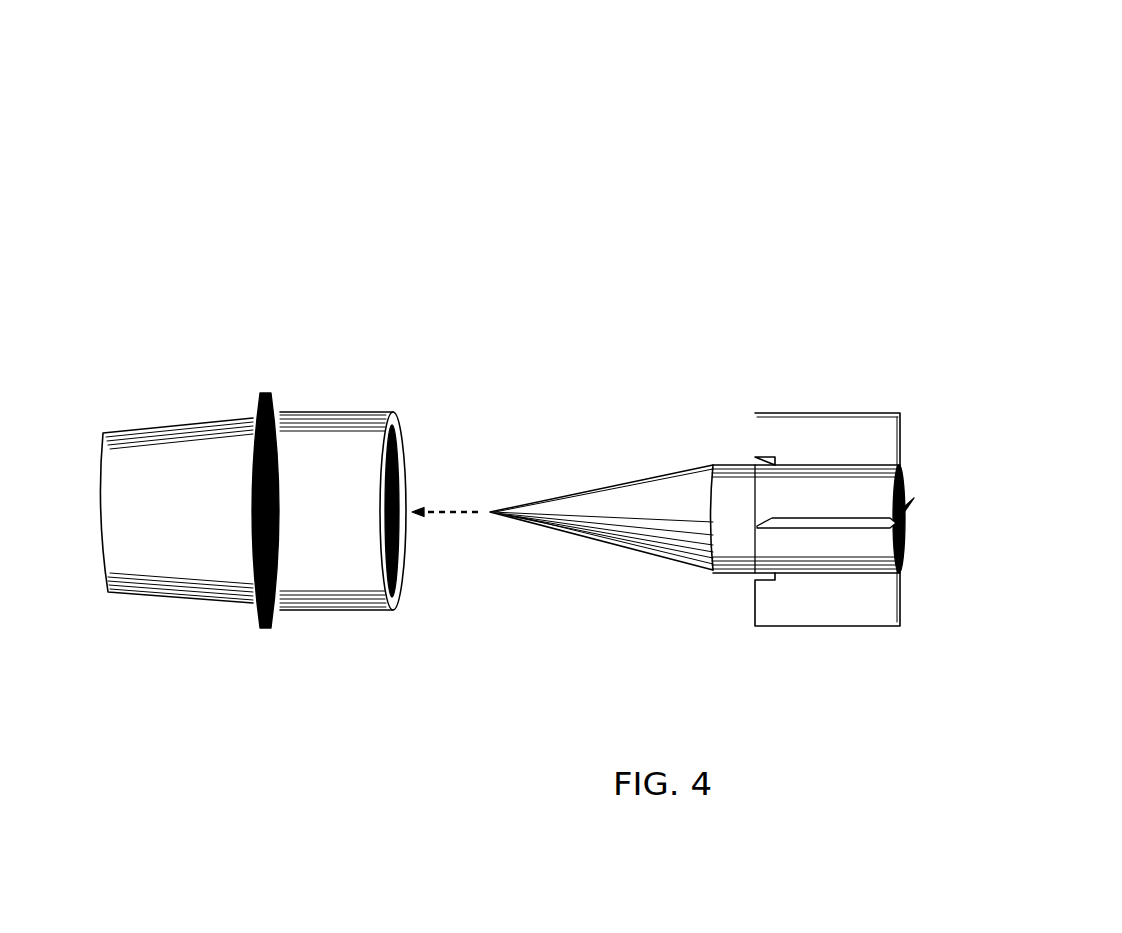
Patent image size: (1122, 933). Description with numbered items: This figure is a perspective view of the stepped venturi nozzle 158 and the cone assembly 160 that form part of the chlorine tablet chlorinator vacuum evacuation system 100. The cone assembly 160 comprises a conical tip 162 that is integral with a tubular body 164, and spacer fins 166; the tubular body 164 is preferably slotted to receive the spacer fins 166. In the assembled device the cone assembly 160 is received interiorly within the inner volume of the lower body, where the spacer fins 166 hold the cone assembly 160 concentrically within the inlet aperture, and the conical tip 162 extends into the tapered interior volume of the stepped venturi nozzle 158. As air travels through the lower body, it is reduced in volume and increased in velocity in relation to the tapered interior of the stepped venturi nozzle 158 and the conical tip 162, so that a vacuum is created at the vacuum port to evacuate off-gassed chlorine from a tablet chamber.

The chlorine tablet chlorinator vacuum evacuation system 100 is at (692, 80).
The stepped venturi nozzle 158 is at (263, 393).
The cone assembly 160 is at (715, 298).
The conical tip 162 is at (602, 542).
The tubular body 164 is at (738, 458).
The spacer fins 166 is at (855, 415).